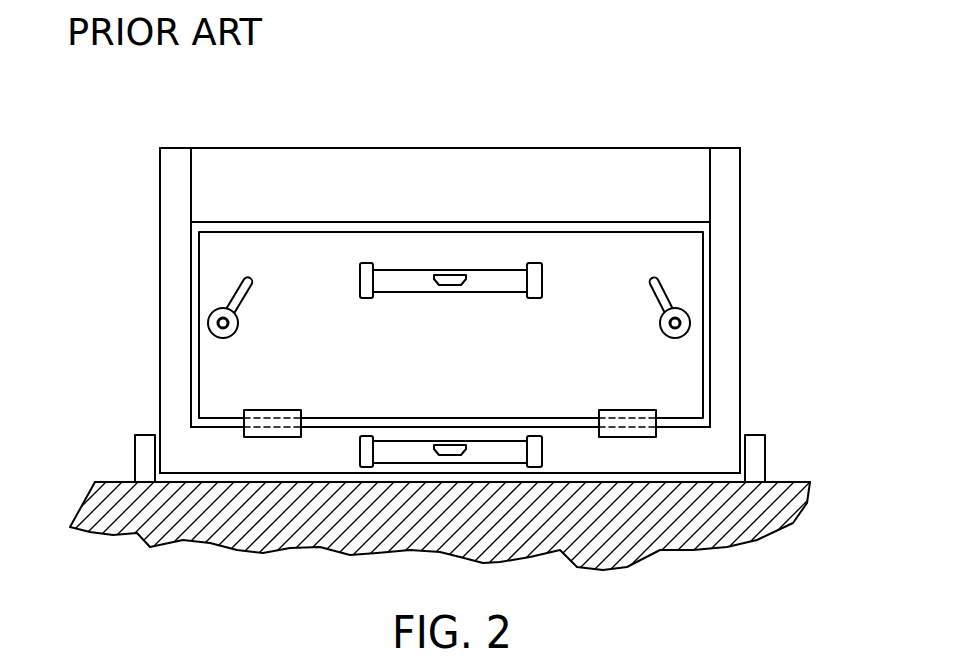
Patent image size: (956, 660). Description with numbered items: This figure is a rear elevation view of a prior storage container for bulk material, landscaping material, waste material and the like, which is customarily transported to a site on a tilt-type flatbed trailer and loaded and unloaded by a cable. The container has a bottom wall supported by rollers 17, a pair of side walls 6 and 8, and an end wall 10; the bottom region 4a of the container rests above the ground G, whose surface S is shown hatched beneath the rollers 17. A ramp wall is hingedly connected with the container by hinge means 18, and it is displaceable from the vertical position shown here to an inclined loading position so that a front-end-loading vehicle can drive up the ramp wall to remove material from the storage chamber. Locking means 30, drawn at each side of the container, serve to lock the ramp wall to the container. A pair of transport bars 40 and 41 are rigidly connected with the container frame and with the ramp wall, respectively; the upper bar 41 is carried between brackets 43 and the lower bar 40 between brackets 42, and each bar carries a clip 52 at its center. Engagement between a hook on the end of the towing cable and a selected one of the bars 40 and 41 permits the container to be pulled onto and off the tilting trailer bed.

The end wall 10 is at (260, 168).
The side wall 8 is at (180, 180).
The side wall 6 is at (727, 203).
The bottom plate 4a is at (192, 462).
The transport bar 41 is at (399, 278).
The upper bar brackets 43 is at (367, 263).
The transport bar 40 is at (490, 448).
The bar 42 is at (365, 437).
The clip 52 is at (448, 278).
The locking means 30 is at (237, 297).
The hinge means 18 is at (265, 410).
The rollers 17 is at (143, 435).
The ground G is at (697, 525).
The ground surface S is at (780, 480).